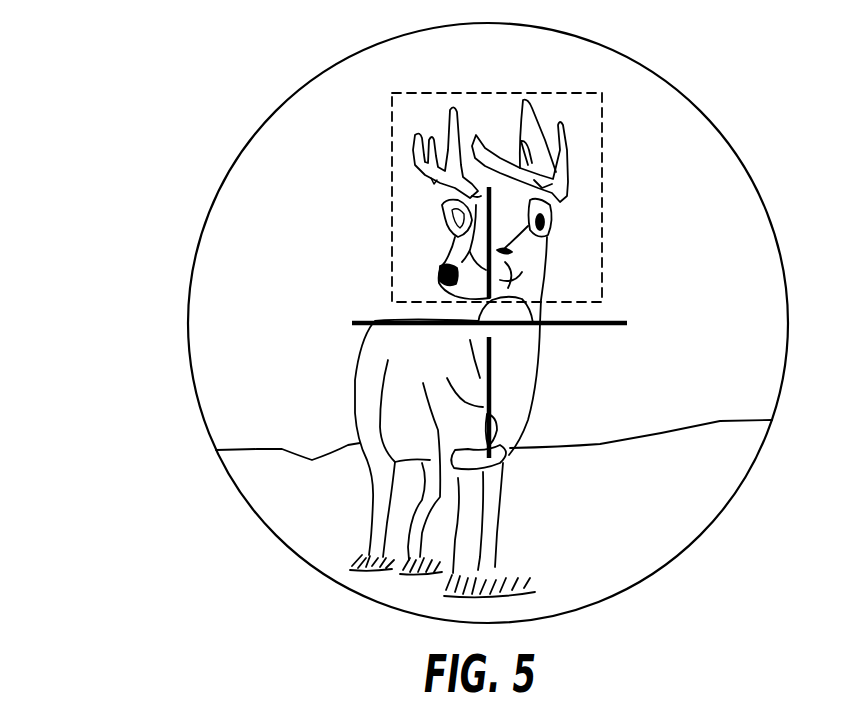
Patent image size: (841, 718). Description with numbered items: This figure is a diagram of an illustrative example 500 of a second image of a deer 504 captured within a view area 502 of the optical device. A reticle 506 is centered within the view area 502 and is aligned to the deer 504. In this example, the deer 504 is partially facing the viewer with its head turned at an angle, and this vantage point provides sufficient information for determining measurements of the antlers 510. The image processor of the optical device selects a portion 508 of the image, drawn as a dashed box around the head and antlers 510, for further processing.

The illustrative example 500 is at (152, 55).
The view area 502 is at (335, 62).
The deer 504 is at (357, 378).
The reticle 506 is at (360, 322).
The portion 508 is at (392, 258).
The antlers 510 is at (413, 158).